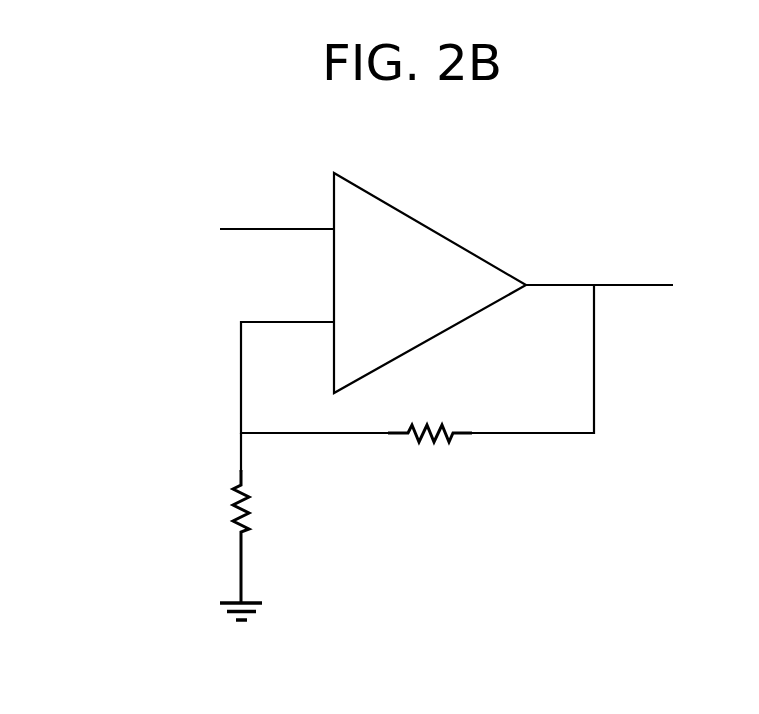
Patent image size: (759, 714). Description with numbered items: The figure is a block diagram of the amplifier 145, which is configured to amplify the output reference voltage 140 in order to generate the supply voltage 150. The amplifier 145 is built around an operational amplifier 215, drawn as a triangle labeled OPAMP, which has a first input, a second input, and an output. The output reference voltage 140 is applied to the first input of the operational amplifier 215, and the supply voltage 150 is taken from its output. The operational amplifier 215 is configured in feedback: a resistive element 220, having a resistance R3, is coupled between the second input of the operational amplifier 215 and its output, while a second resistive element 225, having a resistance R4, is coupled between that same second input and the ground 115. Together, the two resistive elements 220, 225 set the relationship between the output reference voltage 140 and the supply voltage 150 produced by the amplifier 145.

The amplifier 145 is at (166, 96).
The operational amplifier 215 is at (423, 222).
The output reference voltage 140 is at (245, 229).
The supply voltage 150 is at (662, 280).
The resistive element 220 is at (428, 452).
The resistive element 225 is at (257, 507).
The ground 115 is at (207, 602).